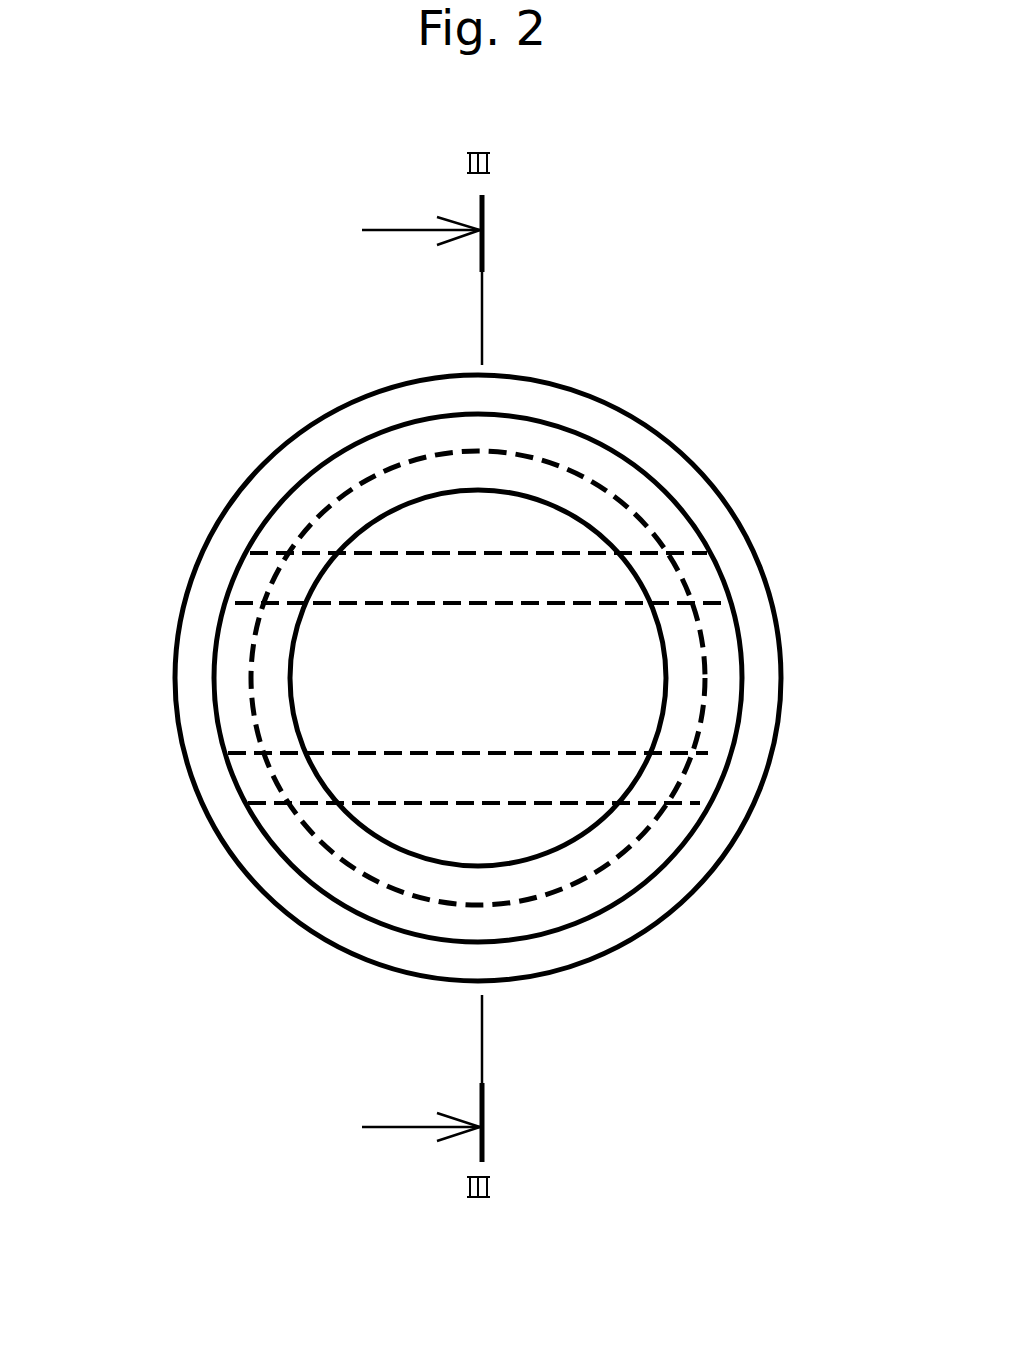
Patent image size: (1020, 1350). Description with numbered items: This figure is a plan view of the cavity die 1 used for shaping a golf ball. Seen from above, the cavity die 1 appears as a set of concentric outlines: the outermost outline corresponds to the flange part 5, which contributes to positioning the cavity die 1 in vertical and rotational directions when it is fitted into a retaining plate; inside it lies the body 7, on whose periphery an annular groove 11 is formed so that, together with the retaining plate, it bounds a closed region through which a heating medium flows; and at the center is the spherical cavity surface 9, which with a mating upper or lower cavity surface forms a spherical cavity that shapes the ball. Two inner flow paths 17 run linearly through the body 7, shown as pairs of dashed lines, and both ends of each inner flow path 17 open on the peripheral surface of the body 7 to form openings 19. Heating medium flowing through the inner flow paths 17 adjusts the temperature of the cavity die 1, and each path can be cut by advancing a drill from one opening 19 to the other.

The cavity die 1 is at (722, 233).
The flange part 5 is at (757, 632).
The body 7 is at (693, 677).
The cavity surface 9 is at (460, 866).
The annular groove 11 is at (630, 484).
The inner flow path 17 is at (393, 577).
The opening 19 is at (230, 573).